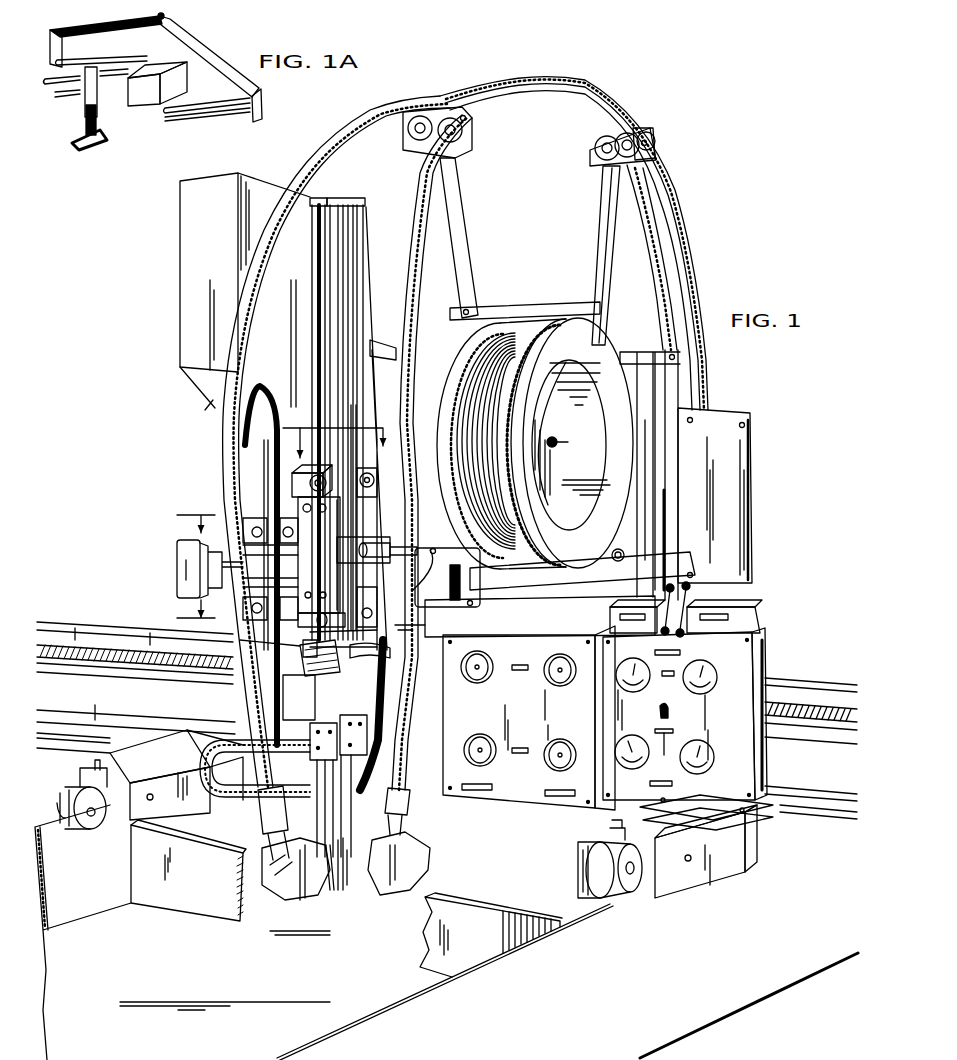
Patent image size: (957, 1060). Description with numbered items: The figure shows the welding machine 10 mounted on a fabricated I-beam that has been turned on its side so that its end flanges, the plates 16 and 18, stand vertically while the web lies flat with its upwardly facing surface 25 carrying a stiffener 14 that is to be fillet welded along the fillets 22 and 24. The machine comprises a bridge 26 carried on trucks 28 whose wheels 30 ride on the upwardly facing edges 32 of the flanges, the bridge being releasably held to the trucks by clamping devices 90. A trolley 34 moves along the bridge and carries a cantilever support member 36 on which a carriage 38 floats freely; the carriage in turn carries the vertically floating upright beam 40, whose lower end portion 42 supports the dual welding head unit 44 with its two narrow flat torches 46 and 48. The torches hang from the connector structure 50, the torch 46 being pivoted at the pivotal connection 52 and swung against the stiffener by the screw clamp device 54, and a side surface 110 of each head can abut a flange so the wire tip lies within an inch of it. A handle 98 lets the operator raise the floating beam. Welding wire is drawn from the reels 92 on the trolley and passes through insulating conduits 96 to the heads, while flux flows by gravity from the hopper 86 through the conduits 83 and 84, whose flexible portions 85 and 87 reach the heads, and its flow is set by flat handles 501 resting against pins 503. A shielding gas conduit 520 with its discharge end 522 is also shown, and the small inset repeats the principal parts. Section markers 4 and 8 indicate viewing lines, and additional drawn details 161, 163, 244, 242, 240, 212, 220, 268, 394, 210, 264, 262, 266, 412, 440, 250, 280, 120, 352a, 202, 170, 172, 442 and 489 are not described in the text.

In FIG. 1A, the machine 10 is at (192, 30).
In FIG. 1, the machine 10 is at (158, 467).
In FIG. 1A, the support frame 161 is at (240, 68).
In FIG. 1A, the pivot pin 163 is at (158, 16).
In FIG. 1A, the cantilever support member 36 is at (55, 72).
In FIG. 1, the cantilever support member 36 is at (168, 563).
In FIG. 1A, the trolley 34 is at (170, 66).
In FIG. 1, the trolley 34 is at (616, 587).
In FIG. 1A, the bridge 26 is at (247, 102).
In FIG. 1, the bridge 26 is at (791, 672).
In FIG. 1A, the trucks 28 is at (53, 83).
In FIG. 1, the trucks 28 is at (163, 747).
In FIG. 1A, the upright member or beam 40 is at (100, 105).
In FIG. 1, the upright member or beam 40 is at (323, 363).
In FIG. 1A, the carriage 38 is at (78, 100).
In FIG. 1, the carriage 38 is at (288, 512).
In FIG. 1A, the dual welding head arrangement 44 is at (92, 152).
In FIG. 1, the dual welding head arrangement 44 is at (452, 836).
In FIG. 1, the hopper 86 is at (196, 272).
In FIG. 1, the shielding gas conduit 520 is at (196, 352).
In FIG. 1, the discharge end 522 is at (237, 392).
In FIG. 1, the section line 4- 4 is at (335, 430).
In FIG. 1, the insulating conduits 96 is at (658, 238).
In FIG. 1, the pulley bracket 244 is at (472, 122).
In FIG. 1, the pulley 242 is at (456, 100).
In FIG. 1, the support post 240 is at (470, 217).
In FIG. 1, the reels 92 is at (562, 320).
In FIG. 1, the reel hub bolt 212 is at (568, 442).
In FIG. 1, the reel shaft end 220 is at (612, 552).
In FIG. 1, the reel flange 268 is at (433, 558).
In FIG. 1, the cable coil 394 is at (430, 520).
In FIG. 1, the side panel 210 is at (742, 492).
In FIG. 1, the upper base block 264 is at (470, 590).
In FIG. 1, the lower base block 262 is at (470, 612).
In FIG. 1, the flux conduit 83 is at (417, 628).
In FIG. 1, the left control panel 266 is at (529, 718).
In FIG. 1, the control knob 412 is at (486, 688).
In FIG. 1, the flexible portion 85 is at (440, 705).
In FIG. 1, the control knob 440 is at (486, 778).
In FIG. 1, the right control panel 250 is at (548, 826).
In FIG. 1, the guide rail 280 is at (168, 598).
In FIG. 1, the track rail 120 is at (823, 735).
In FIG. 1, the section line 8- 8 is at (186, 568).
In FIG. 1, the rail flange 352a is at (210, 628).
In FIG. 1, the screw clamp device 54 is at (255, 650).
In FIG. 1, the connector structure 50 is at (240, 685).
In FIG. 1, the wheels 30 is at (68, 788).
In FIG. 1, the wheel hub 202 is at (97, 830).
In FIG. 1, the mounting plate 170 is at (748, 797).
In FIG. 1, the lower plate 172 is at (775, 818).
In FIG. 1, the releasable clamping devices 90 is at (770, 826).
In FIG. 1, the flexible portion 87 is at (222, 797).
In FIG. 1, the flux conduit 84 is at (273, 700).
In FIG. 1, the hose clamp 442 is at (273, 735).
In FIG. 1, the pivotal connection 52 is at (328, 686).
In FIG. 1, the handle 98 is at (322, 711).
In FIG. 1, the flat handles 501 is at (308, 843).
In FIG. 1, the lower end portion 42 is at (395, 690).
In FIG. 1, the pins 503 is at (268, 860).
In FIG. 1, the side surface 110 is at (320, 867).
In FIG. 1, the nozzle arm 489 is at (332, 882).
In FIG. 1, the welding head or torch 48 is at (383, 860).
In FIG. 1, the welding head or torch 46 is at (322, 885).
In FIG. 1, the end flange plate 18 is at (85, 903).
In FIG. 1, the stiffener 14 is at (184, 898).
In FIG. 1, the fillet 22 is at (207, 920).
In FIG. 1, the fillet 24 is at (243, 930).
In FIG. 1, the upwardly facing edges 32 is at (503, 953).
In FIG. 1, the upwardly facing surface 25 is at (367, 997).
In FIG. 1, the end flange plate 16 is at (700, 1018).